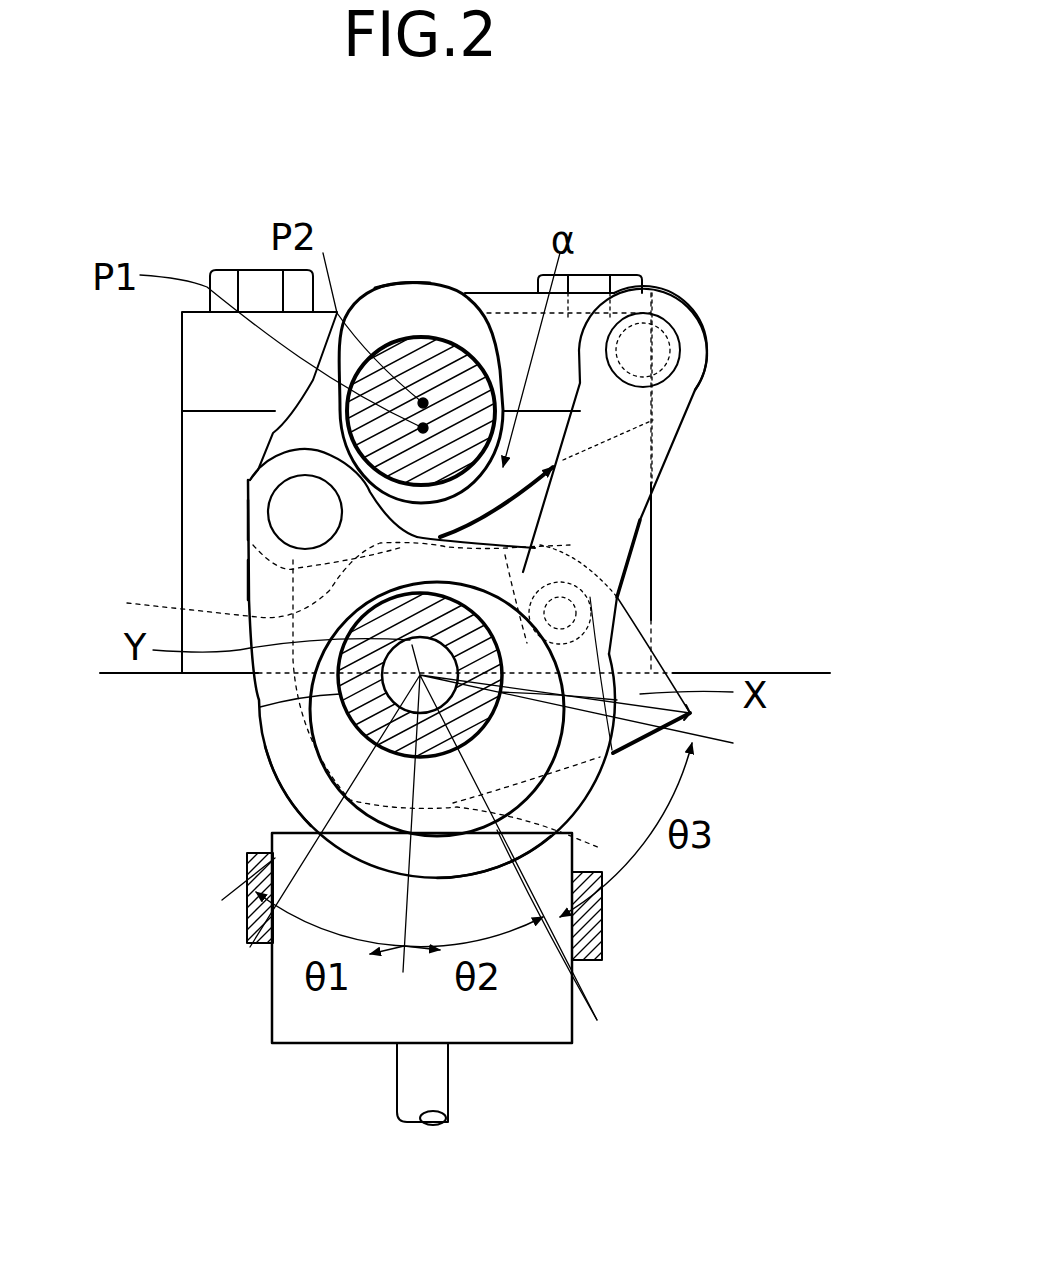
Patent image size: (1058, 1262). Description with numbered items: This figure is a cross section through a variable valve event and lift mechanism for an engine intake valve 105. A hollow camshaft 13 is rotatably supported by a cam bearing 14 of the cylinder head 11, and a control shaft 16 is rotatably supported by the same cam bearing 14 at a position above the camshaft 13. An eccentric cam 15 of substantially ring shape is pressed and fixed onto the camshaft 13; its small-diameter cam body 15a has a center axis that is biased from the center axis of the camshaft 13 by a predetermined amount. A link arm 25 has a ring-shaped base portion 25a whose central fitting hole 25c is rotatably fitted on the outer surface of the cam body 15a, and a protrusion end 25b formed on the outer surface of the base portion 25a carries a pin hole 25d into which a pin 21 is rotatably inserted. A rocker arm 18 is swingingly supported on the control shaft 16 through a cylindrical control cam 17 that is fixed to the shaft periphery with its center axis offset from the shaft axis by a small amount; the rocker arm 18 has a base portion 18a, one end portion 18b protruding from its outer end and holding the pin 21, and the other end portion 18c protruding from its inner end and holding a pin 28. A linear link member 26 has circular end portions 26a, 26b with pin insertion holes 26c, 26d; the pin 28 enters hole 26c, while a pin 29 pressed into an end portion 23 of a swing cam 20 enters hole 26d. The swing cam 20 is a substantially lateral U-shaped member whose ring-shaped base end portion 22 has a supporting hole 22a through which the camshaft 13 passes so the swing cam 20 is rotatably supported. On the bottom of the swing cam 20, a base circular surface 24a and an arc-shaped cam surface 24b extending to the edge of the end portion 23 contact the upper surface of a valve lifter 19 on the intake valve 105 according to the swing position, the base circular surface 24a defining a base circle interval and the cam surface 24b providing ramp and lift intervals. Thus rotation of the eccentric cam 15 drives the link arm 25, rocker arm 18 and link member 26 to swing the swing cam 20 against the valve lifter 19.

The cylinder head 11 is at (820, 673).
The camshaft 13 is at (260, 708).
The cam bearing 14 is at (177, 437).
The eccentric cam 15 is at (552, 786).
The cam body 15a is at (597, 1020).
The control shaft 16 is at (457, 337).
The control cam 17 is at (593, 445).
The rocker arm 18 is at (403, 293).
The base portion 18a is at (423, 290).
The one end portion 18b is at (272, 410).
The other end portion 18c is at (595, 318).
The valve lifter 19 is at (505, 1030).
The swing cam 20 is at (697, 717).
The pin 21 is at (280, 488).
The base end portion 22 is at (250, 947).
The supporting hole 22a is at (692, 742).
The end portion 23 is at (637, 635).
The base circular surface 24a is at (380, 812).
The cam surface 24b is at (600, 780).
The link arm 25 is at (257, 723).
The base portion 25a is at (285, 762).
The protrusion end 25b is at (257, 577).
The fitting hole 25c is at (500, 835).
The pin hole 25d is at (263, 527).
The link member 26 is at (613, 490).
The one end portion 26a is at (707, 333).
The other end portion 26b is at (605, 618).
The pin insertion hole 26c is at (683, 297).
The pin insertion hole 26d is at (625, 600).
The pin 28 is at (660, 357).
The pin 29 is at (653, 540).
The intake valve 105 is at (397, 1088).